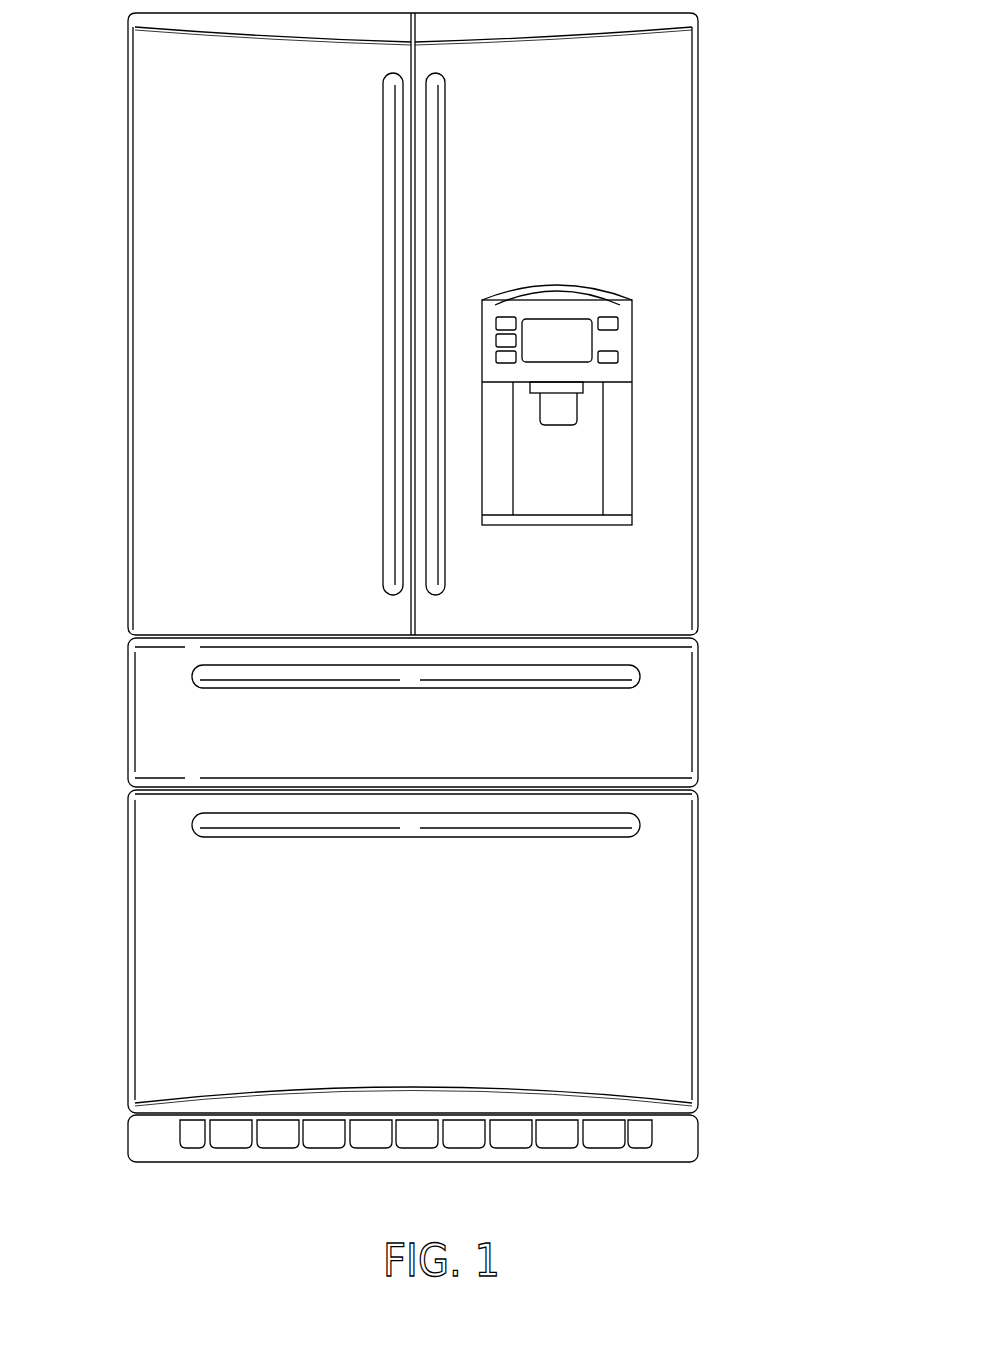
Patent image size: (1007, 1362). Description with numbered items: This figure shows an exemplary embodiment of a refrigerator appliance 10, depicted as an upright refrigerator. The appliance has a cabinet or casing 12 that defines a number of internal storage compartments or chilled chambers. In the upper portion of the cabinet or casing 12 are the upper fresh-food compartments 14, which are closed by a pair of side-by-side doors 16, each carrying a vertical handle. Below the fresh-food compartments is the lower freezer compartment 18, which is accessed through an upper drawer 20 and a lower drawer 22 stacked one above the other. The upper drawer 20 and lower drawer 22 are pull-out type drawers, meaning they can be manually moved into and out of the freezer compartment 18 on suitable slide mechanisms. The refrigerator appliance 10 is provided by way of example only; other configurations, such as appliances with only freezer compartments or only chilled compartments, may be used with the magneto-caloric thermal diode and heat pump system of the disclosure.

The refrigerator appliance 10 is at (449, 587).
The cabinet or casing 12 is at (698, 548).
The upper fresh-food compartments 14 is at (168, 233).
The doors 16 is at (304, 542).
The lower freezer compartment 18 is at (450, 712).
The upper drawer 20 is at (247, 737).
The lower drawer 22 is at (536, 1032).